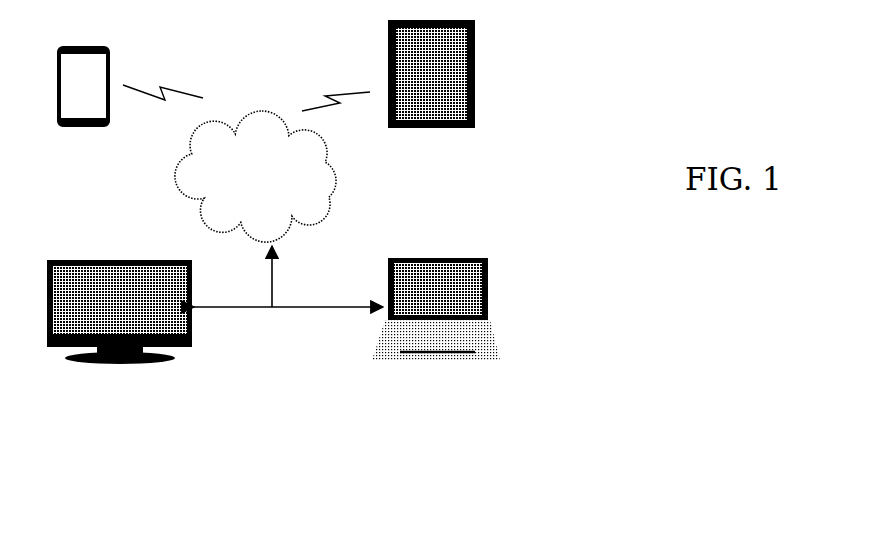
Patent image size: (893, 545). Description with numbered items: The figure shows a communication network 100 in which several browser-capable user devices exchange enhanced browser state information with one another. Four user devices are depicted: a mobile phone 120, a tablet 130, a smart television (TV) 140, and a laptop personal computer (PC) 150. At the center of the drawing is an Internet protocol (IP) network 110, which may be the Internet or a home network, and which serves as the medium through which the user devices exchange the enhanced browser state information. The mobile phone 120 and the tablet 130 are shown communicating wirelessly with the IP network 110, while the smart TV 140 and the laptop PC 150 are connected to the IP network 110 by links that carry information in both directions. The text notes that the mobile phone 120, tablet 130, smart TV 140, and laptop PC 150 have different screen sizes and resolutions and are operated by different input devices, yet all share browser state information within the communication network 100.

The communication network 100 is at (218, 456).
The Internet protocol (IP) network 110 is at (337, 176).
The mobile phone 120 is at (110, 118).
The tablet 130 is at (475, 108).
The smart television (TV) 140 is at (192, 340).
The laptop personal computer (PC) 150 is at (497, 348).